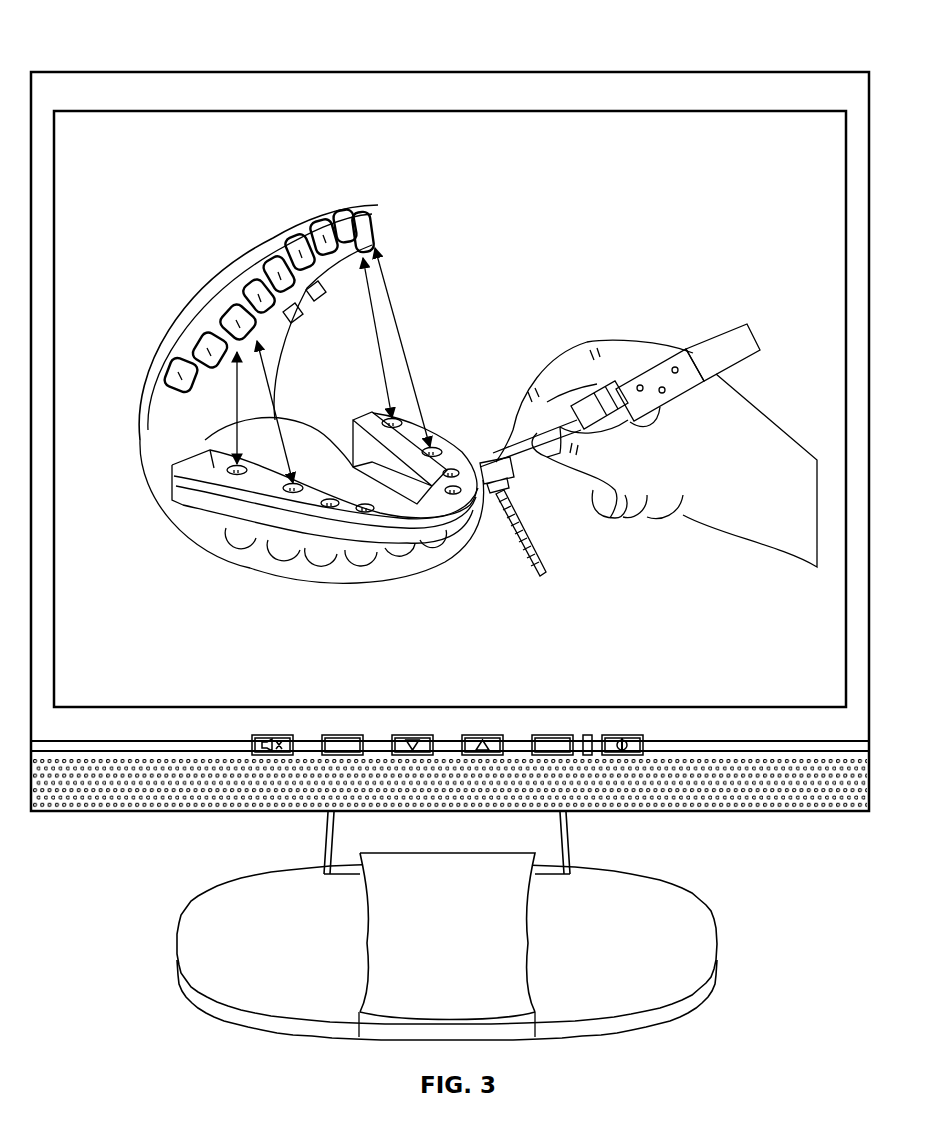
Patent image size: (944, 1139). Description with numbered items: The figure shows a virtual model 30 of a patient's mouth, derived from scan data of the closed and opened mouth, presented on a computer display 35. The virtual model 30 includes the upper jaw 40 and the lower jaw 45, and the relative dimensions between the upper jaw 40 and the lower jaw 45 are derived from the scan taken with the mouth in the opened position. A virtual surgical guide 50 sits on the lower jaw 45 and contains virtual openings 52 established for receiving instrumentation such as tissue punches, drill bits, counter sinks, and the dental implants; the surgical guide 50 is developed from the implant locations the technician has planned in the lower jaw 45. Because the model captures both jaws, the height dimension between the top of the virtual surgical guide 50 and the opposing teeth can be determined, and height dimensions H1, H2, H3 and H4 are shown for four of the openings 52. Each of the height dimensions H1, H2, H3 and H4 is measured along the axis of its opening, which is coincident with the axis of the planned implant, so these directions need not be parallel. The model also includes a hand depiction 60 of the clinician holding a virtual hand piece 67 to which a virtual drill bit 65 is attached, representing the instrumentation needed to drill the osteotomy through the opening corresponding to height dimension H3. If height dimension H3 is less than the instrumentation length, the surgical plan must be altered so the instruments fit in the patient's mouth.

The virtual model 30 is at (175, 44).
The computer display 35 is at (850, 728).
The upper jaw (maxillary) 40 is at (357, 208).
The lower jaw (mandible) 45 is at (300, 563).
The virtual surgical guide 50 is at (172, 506).
The virtual openings 52 is at (241, 463).
The hand depiction 60 is at (663, 304).
The virtual drill bit 65 is at (545, 554).
The virtual hand piece 67 is at (498, 448).
The height dimension H1 is at (423, 417).
The height dimension H2 is at (380, 347).
The height dimension H3 is at (232, 452).
The height dimension H4 is at (268, 482).